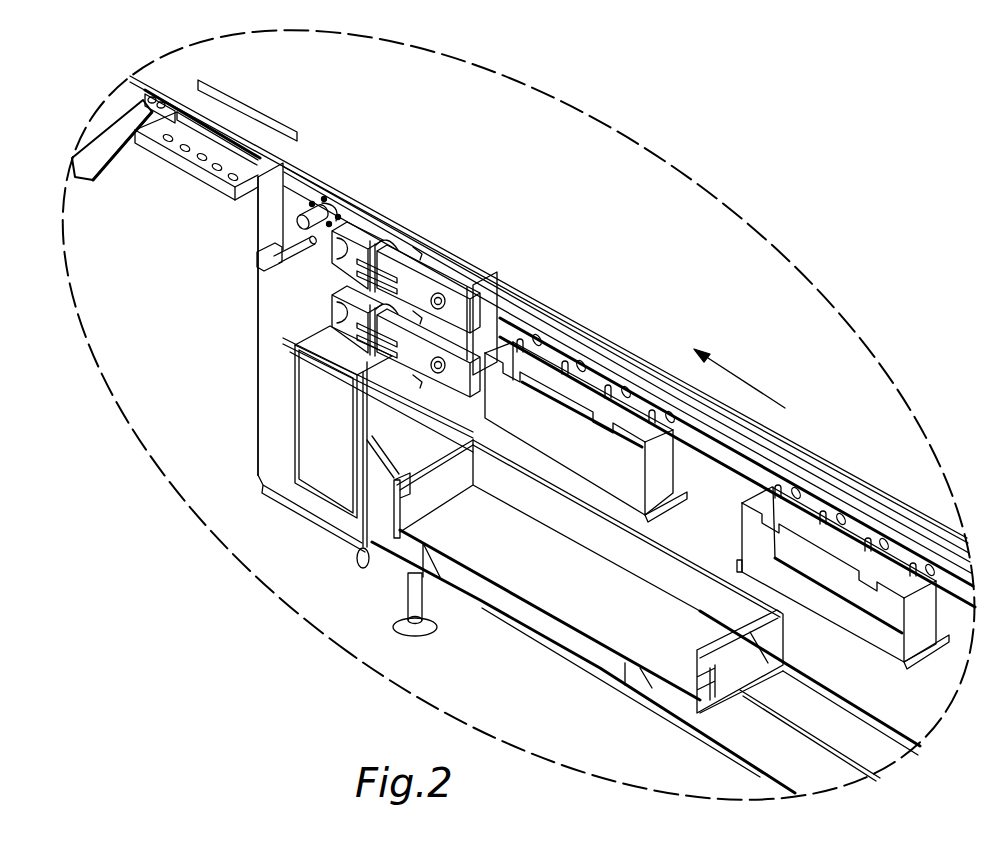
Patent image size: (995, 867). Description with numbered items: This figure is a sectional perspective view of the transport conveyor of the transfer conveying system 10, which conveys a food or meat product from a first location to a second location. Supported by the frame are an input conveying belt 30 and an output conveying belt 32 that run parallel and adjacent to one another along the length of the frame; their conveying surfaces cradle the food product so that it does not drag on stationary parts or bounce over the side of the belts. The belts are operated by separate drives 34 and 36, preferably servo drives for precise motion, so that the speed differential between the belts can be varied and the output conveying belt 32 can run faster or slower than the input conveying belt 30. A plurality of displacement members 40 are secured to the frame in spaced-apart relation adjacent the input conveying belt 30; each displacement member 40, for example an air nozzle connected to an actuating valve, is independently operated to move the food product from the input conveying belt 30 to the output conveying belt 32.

The transfer conveying system 10 is at (582, 268).
The input conveying belt 30 is at (748, 450).
The output conveying belt 32 is at (327, 177).
The drive 34 is at (413, 280).
The drive 36 is at (362, 373).
The displacement member 40 is at (607, 382).